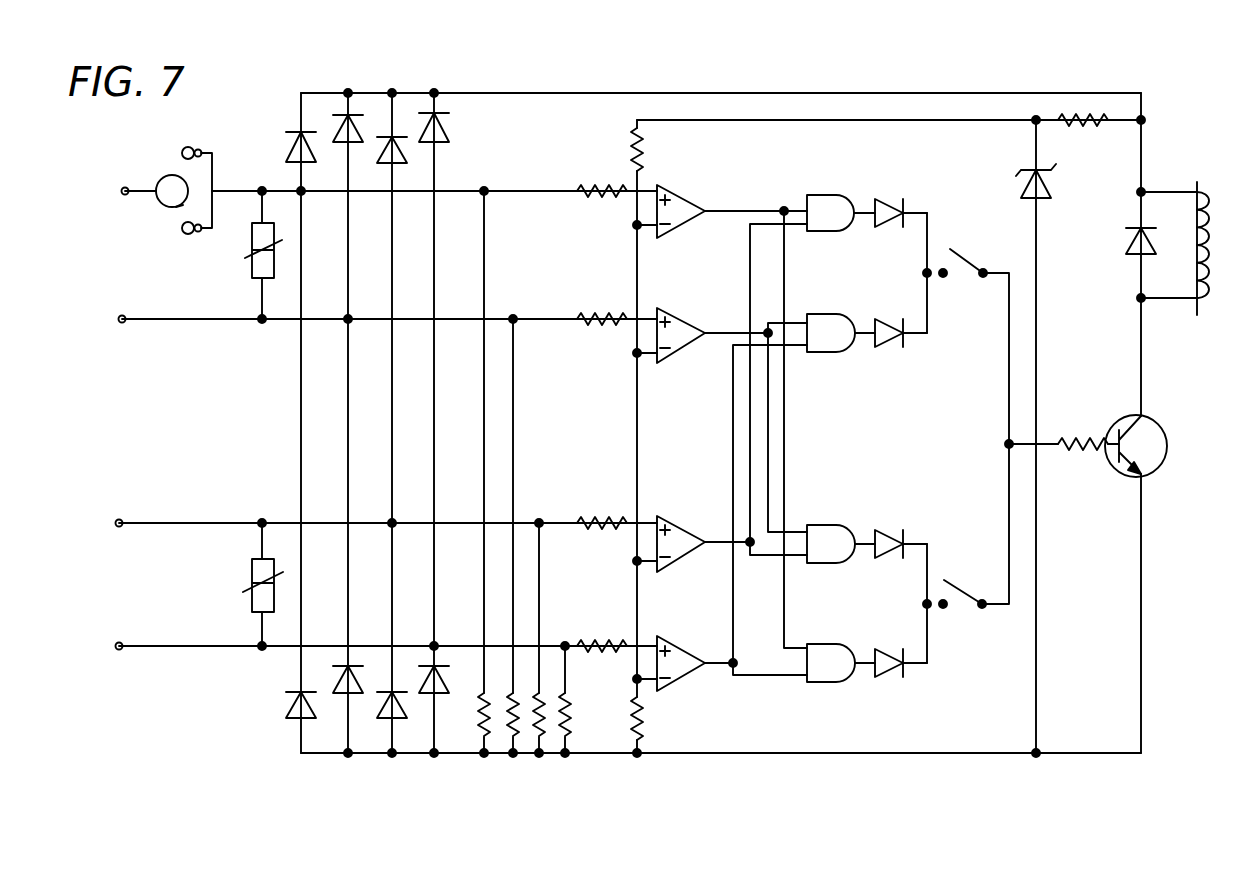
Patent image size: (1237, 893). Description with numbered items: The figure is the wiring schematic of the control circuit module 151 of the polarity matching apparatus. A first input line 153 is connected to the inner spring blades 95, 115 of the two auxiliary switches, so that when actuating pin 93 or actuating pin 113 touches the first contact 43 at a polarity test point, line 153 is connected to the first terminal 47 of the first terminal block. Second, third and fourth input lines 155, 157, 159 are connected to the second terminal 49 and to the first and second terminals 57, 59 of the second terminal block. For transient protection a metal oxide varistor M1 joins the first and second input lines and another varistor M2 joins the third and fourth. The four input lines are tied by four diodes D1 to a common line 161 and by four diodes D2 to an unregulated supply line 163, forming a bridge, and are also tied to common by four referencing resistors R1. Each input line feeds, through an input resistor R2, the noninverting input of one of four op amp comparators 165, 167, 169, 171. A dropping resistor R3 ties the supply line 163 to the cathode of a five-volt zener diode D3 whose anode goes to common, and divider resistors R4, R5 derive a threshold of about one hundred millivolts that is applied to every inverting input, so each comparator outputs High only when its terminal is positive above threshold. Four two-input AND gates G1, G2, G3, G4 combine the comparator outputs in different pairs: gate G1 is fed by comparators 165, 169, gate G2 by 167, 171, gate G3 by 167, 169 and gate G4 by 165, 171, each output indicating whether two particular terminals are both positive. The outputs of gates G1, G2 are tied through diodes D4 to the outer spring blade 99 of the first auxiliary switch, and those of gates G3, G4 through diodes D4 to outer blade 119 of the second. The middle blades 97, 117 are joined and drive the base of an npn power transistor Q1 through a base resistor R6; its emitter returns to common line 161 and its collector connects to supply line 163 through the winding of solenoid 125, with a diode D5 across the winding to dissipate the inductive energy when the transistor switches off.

The unregulated supply line 163 is at (503, 93).
The common line 161 is at (452, 753).
The diodes D2 is at (294, 126).
The diodes D1 is at (288, 705).
The first input line 153 is at (250, 191).
The second input line 155 is at (212, 320).
The third input line 157 is at (203, 522).
The fourth input line 159 is at (215, 648).
The first terminal 47 is at (143, 160).
The second terminal 49 is at (125, 317).
The first terminal 57 is at (120, 520).
The second terminal 59 is at (120, 643).
The actuating pin 93 is at (184, 147).
The inner spring blade 95 is at (204, 152).
The first contact 43 is at (170, 206).
The actuating pin 113 is at (183, 234).
The inner spring blade 115 is at (196, 236).
The metal oxide varistor M1 is at (252, 233).
The varistor M2 is at (252, 560).
The control circuit module 151 is at (208, 392).
The referencing resistors R1 is at (583, 708).
The input resistor R2 is at (596, 186).
The voltage divider resistor R4 is at (632, 142).
The voltage divider resistor R5 is at (632, 702).
The first operational amplifier 165 is at (690, 192).
The second op amp comparator 167 is at (682, 318).
The third op amp comparator 169 is at (690, 522).
The fourth op amp comparator 171 is at (678, 640).
The AND gate G1 is at (830, 194).
The AND gate G2 is at (828, 313).
The AND gate G3 is at (835, 524).
The AND gate G4 is at (846, 620).
The diodes D4 is at (895, 186).
The middle spring blade 97 is at (984, 268).
The outer spring blade 99 is at (944, 282).
The spring blade 117 is at (983, 598).
The spring blade 119 is at (944, 612).
The zener diode D3 is at (1052, 186).
The dropping resistor R3 is at (1096, 130).
The diode D5 is at (1128, 242).
The solenoid 125 is at (1208, 192).
The npn power transistor Q1 is at (1160, 418).
The base resistor R6 is at (1086, 456).